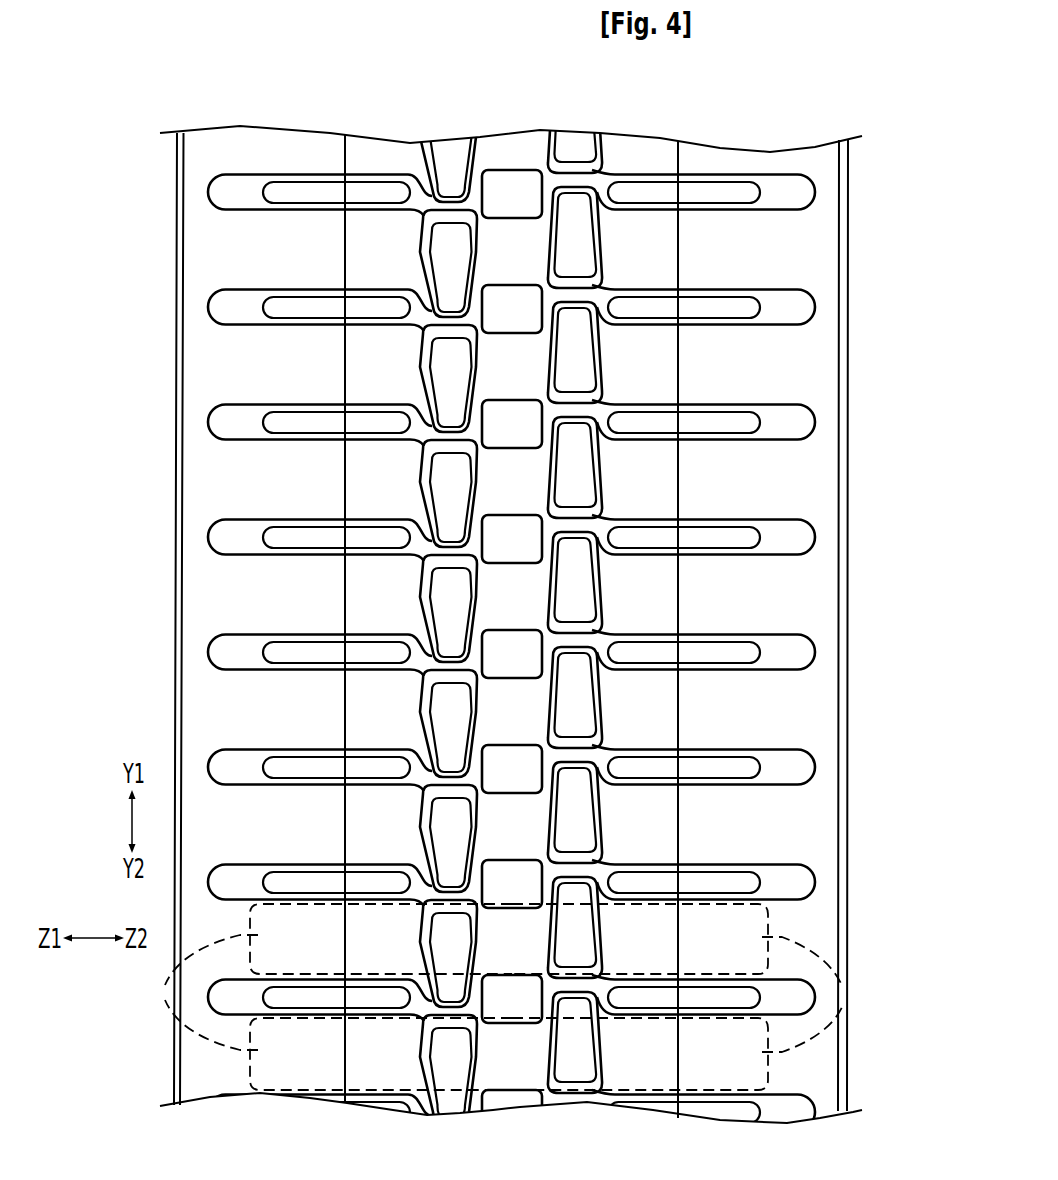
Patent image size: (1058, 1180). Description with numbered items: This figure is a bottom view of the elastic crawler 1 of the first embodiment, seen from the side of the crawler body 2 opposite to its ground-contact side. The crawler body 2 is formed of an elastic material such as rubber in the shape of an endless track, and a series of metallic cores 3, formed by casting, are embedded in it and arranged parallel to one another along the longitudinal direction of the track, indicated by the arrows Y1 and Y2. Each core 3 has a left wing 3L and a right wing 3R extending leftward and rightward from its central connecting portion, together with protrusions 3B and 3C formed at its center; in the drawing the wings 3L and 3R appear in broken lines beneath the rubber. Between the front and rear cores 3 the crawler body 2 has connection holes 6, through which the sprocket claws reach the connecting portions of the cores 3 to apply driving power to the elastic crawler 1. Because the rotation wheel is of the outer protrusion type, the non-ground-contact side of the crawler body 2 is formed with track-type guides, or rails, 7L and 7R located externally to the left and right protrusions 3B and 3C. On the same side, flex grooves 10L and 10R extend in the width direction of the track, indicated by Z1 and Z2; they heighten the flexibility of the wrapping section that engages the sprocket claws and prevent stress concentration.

The elastic crawler 1 is at (727, 93).
The crawler body 2 is at (884, 199).
The core 3 is at (607, 583).
The protrusion 3B is at (447, 720).
The protrusion 3C is at (577, 357).
The left wing 3L is at (158, 996).
The right wing 3R is at (855, 987).
The connection hole 6 is at (512, 197).
The guide 7L is at (368, 365).
The guide 7R is at (640, 822).
The flex groove 10L is at (272, 538).
The flex groove 10R is at (742, 653).